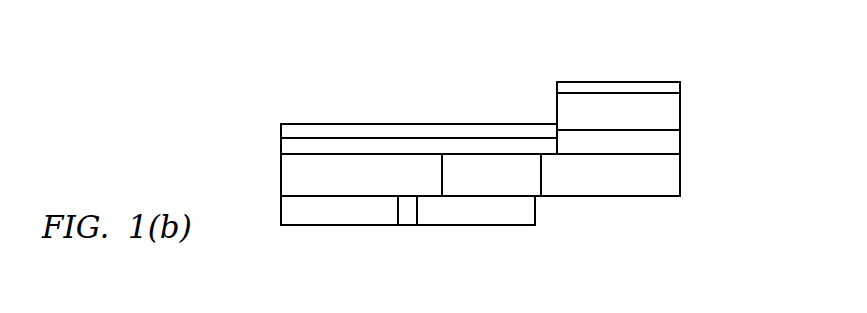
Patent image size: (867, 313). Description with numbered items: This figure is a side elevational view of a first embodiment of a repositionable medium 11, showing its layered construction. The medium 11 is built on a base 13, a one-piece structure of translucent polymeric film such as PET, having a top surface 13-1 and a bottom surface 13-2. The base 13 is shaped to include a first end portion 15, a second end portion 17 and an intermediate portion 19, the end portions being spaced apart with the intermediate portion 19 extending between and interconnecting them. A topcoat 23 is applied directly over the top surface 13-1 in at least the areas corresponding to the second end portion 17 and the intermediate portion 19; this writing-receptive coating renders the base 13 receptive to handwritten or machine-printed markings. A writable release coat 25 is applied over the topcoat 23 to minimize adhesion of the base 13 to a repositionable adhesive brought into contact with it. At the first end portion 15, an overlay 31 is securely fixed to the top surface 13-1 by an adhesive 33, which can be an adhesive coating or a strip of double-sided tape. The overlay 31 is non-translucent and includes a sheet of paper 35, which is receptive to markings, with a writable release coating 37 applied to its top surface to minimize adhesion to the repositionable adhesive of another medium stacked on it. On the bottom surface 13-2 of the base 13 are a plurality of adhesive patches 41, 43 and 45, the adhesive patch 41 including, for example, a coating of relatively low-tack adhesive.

The repositionable medium 11 is at (460, 95).
The base 13 is at (270, 177).
The top surface 13-1 is at (357, 153).
The bottom surface 13-2 is at (652, 197).
The first end portion 15 is at (614, 183).
The second end portion 17 is at (302, 183).
The intermediate portion 19 is at (473, 177).
The topcoat 23 is at (310, 147).
The writable release coat 25 is at (394, 123).
The overlay 31 is at (548, 88).
The adhesive 33 is at (670, 141).
The sheet of paper 35 is at (664, 110).
The writable release coating 37 is at (618, 82).
The adhesive patch 41 is at (406, 216).
The adhesive patch 43 is at (346, 213).
The adhesive patch 45 is at (518, 218).